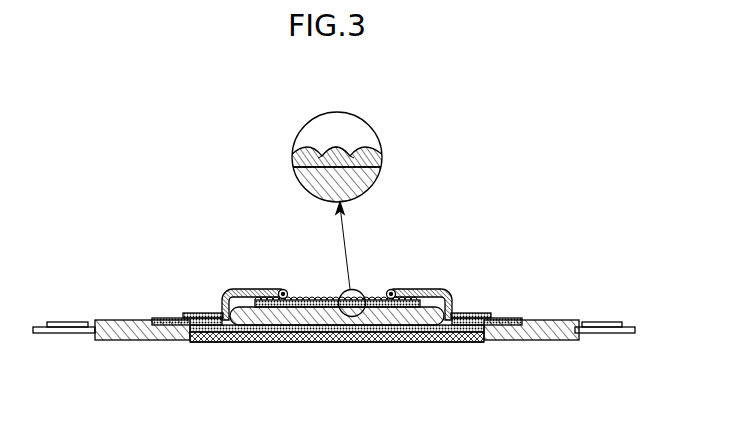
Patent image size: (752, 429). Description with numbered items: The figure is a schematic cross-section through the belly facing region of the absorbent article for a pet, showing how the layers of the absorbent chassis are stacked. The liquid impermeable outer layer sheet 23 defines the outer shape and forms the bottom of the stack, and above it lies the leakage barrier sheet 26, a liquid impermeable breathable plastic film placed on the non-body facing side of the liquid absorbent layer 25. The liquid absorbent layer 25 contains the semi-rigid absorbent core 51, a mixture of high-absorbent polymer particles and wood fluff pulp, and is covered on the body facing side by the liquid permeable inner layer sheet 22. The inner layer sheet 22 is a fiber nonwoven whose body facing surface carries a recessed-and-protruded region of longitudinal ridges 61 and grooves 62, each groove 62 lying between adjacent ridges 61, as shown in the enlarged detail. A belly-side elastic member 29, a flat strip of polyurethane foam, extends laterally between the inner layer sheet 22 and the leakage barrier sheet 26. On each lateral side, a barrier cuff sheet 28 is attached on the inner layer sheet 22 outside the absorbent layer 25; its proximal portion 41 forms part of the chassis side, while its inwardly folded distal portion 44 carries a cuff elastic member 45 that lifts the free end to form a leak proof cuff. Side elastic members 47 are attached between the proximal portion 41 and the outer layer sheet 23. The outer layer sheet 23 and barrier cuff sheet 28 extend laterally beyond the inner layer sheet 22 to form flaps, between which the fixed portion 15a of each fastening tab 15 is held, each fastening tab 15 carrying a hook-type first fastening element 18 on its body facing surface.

The fastening tab 15 is at (66, 333).
The fixed portion of fastening tab 15a is at (130, 340).
The first fastening element 18 is at (67, 322).
The inner layer sheet 22 is at (330, 300).
The outer layer sheet 23 is at (422, 343).
The liquid absorbent layer 25 is at (268, 325).
The leakage barrier sheet 26 is at (389, 332).
The barrier cuff sheet 28 is at (238, 293).
The belly-side elastic member 29 is at (302, 342).
The proximal portion of barrier cuff sheet 41 is at (210, 313).
The distal portion of barrier cuff sheet 44 is at (284, 290).
The cuff elastic member 45 is at (280, 291).
The side elastic member 47 is at (187, 317).
The absorbent core 51 is at (360, 316).
The ridge 61 is at (336, 146).
The groove 62 is at (320, 153).